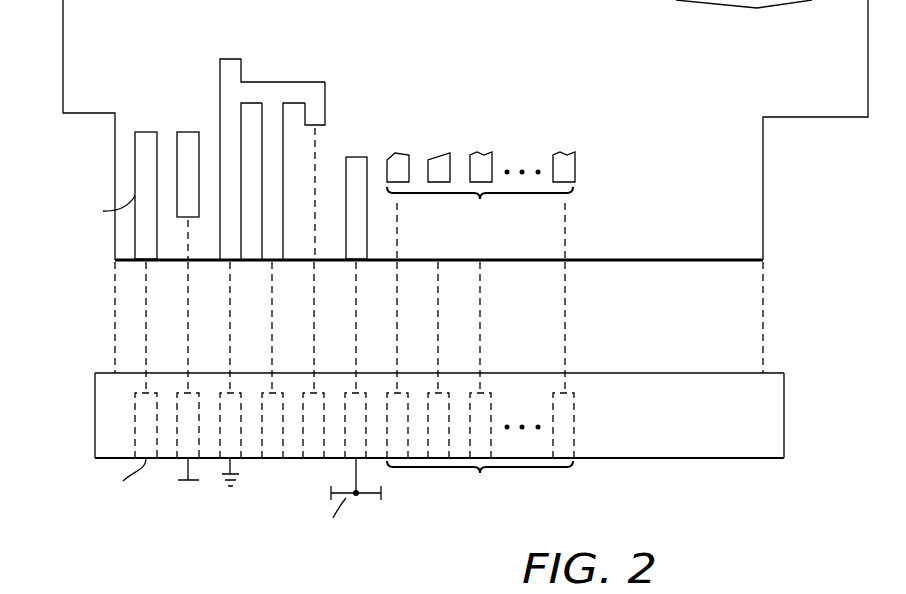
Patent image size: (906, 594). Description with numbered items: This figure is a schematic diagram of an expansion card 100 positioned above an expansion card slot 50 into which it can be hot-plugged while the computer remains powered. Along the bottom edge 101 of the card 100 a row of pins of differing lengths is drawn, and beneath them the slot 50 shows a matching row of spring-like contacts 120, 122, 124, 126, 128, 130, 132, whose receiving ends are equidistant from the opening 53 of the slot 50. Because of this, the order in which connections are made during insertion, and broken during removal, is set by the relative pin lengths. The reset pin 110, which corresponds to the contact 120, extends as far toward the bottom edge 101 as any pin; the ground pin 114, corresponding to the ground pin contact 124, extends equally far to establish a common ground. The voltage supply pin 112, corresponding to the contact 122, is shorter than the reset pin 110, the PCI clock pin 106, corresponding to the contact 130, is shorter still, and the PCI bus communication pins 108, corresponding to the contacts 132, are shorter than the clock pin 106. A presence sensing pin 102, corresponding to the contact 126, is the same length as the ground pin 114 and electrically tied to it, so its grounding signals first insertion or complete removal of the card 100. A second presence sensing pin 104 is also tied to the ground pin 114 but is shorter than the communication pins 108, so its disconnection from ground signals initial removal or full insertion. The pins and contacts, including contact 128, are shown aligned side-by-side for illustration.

The expansion card 100 is at (763, 178).
The bottom edge 101 is at (688, 262).
The presence sensing pin 102 is at (272, 253).
The presence sensing pin 104 is at (325, 93).
The PCI clock pin 106 is at (357, 158).
The PCI bus communication pins 108 is at (602, 228).
The reset pin 110 is at (115, 133).
The voltage supply pin 112 is at (187, 132).
The ground pin 114 is at (230, 60).
The expansion card slot 50 is at (710, 459).
The opening 53 is at (710, 375).
The contact 120 is at (135, 423).
The contact 122 is at (177, 424).
The ground pin contact 124 is at (230, 393).
The contact 126 is at (272, 458).
The contact 128 is at (312, 393).
The contact 130 is at (355, 393).
The contacts 132 is at (605, 509).